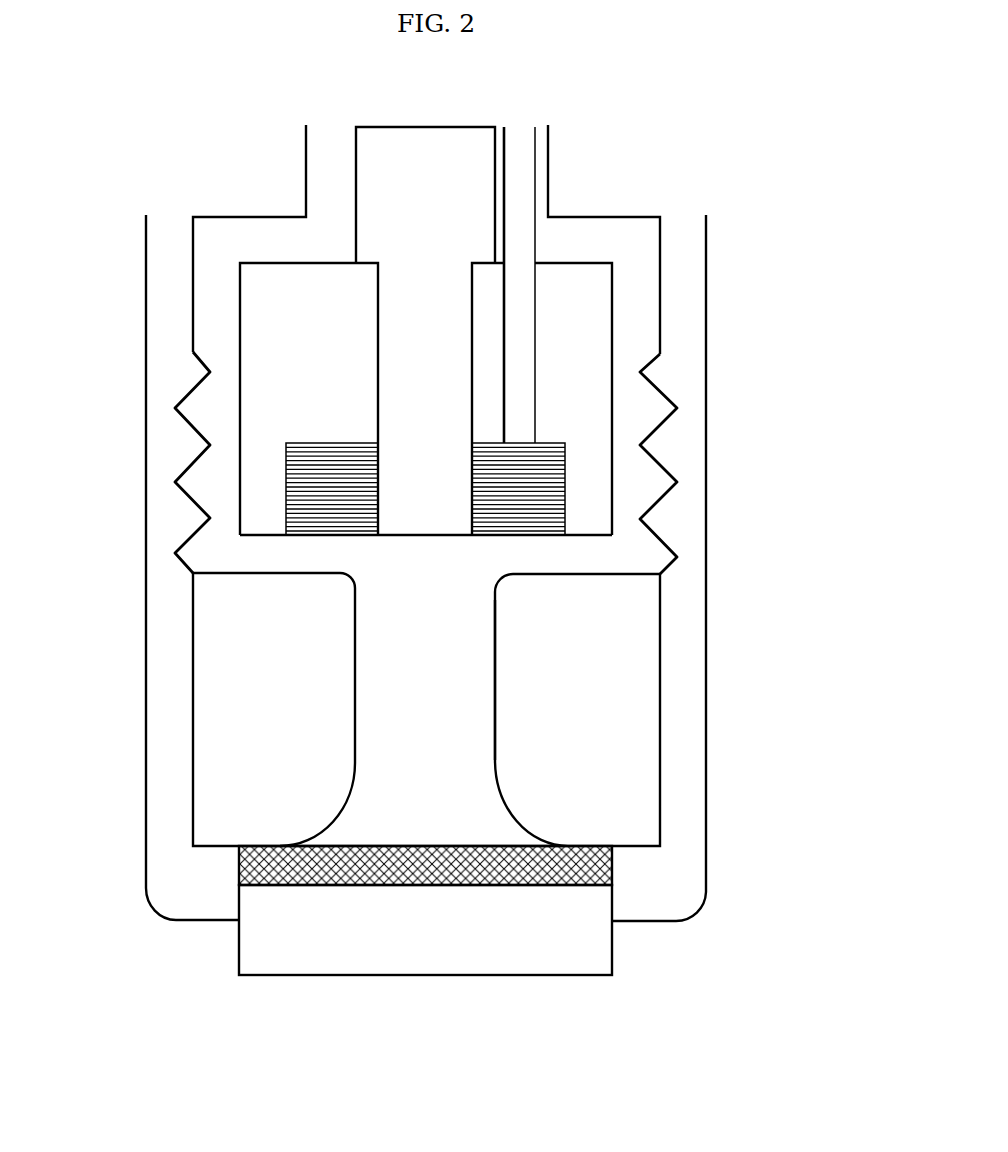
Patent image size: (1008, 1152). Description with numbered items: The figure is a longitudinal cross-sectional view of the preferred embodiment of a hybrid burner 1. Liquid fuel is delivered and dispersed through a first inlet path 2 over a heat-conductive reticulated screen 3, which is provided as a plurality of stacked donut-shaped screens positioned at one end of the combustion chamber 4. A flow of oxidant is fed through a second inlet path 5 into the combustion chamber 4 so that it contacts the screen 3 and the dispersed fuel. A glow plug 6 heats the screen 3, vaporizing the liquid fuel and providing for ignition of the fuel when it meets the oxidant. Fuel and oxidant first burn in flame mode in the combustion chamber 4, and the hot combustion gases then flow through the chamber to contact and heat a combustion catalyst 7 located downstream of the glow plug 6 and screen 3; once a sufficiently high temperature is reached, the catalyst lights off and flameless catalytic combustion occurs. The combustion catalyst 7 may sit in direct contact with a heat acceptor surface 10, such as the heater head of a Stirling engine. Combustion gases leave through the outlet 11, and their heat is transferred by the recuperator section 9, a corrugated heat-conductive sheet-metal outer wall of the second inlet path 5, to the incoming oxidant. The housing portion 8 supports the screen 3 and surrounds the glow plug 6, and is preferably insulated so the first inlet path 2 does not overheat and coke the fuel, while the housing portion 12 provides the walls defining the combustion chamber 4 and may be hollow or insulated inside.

The hybrid burner 1 is at (652, 122).
The first inlet path 2 is at (512, 122).
The heat-conductive reticulated screen 3 is at (507, 497).
The combustion chamber 4 is at (430, 635).
The second inlet path 5 is at (630, 228).
The glow plug 6 is at (425, 485).
The combustion catalyst 7 is at (352, 887).
The housing portion 8 is at (585, 318).
The recuperator section 9 is at (688, 417).
The heat acceptor surface 10 is at (448, 960).
The outlet 11 is at (683, 765).
The housing portion 12 is at (590, 686).